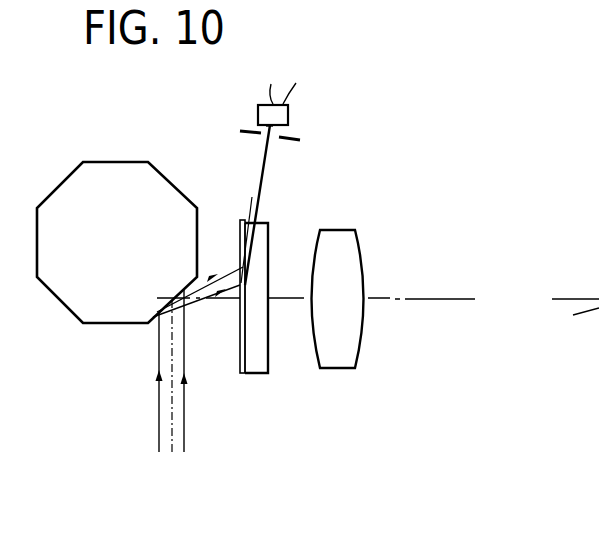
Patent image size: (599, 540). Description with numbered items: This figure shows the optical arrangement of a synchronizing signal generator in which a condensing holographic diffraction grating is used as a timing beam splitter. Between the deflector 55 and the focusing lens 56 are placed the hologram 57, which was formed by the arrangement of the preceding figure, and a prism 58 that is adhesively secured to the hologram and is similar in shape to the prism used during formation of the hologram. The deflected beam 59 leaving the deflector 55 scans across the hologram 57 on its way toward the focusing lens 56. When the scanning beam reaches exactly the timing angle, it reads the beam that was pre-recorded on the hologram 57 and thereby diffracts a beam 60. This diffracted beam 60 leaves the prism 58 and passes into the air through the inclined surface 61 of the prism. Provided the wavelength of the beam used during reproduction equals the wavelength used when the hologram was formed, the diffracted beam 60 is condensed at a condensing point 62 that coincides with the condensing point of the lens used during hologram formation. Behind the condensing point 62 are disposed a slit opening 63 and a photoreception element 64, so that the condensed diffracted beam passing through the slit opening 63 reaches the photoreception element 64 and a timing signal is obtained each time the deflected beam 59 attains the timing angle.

The deflector 55 is at (105, 308).
The focusing lens 56 is at (335, 370).
The hologram 57 is at (242, 373).
The prism 58 is at (258, 367).
The deflected beam 59 is at (230, 286).
The diffracted beam 60 is at (255, 213).
The inclined surface 61 is at (248, 218).
The condensing point 62 is at (270, 137).
The slit opening 63 is at (300, 140).
The photoreception element 64 is at (288, 113).